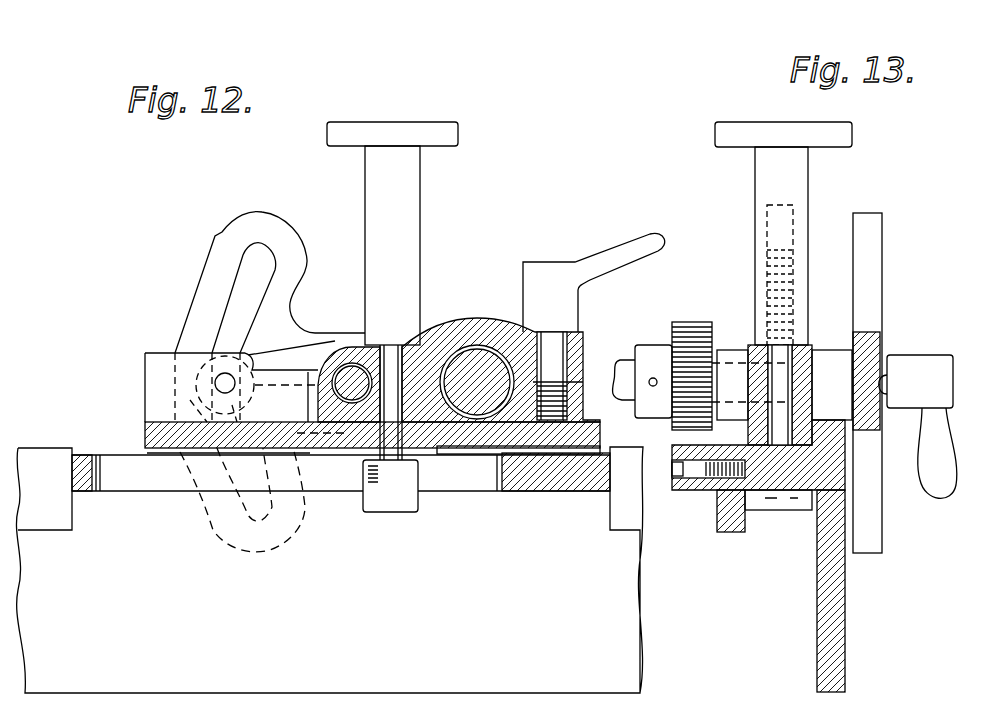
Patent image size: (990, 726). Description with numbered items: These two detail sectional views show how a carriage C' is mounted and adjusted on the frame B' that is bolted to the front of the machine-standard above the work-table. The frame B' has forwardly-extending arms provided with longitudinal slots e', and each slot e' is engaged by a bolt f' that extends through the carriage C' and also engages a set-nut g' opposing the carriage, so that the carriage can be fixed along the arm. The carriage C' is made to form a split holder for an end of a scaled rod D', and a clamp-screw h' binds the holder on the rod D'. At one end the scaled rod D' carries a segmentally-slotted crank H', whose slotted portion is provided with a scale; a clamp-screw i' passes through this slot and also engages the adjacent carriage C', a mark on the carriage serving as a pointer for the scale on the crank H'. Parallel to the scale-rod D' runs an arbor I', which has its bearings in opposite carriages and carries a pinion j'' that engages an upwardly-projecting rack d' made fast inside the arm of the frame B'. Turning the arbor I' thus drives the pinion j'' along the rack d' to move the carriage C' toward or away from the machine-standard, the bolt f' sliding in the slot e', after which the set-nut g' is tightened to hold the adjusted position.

In FIG. 12, the frame B' is at (329, 570).
In FIG. 13, the frame B' is at (802, 591).
In FIG. 12, the carriage C' is at (372, 452).
In FIG. 13, the carriage C' is at (762, 401).
In FIG. 12, the scaled rod D' is at (501, 370).
In FIG. 12, the segmentally-slotted crank H' is at (270, 382).
In FIG. 13, the segmentally-slotted crank H' is at (848, 383).
In FIG. 12, the arbor I' is at (349, 366).
In FIG. 13, the arbor I' is at (636, 377).
In FIG. 12, the longitudinal slot e' is at (144, 468).
In FIG. 12, the bolt f' is at (373, 464).
In FIG. 13, the bolt f' is at (764, 516).
In FIG. 12, the set-nut g' is at (392, 317).
In FIG. 13, the set-nut g' is at (783, 233).
In FIG. 12, the clamp-screw h' is at (594, 282).
In FIG. 12, the clamp-screw i' is at (245, 387).
In FIG. 13, the clamp-screw i' is at (918, 426).
In FIG. 13, the pinion j'' is at (692, 357).
In FIG. 13, the rack d' is at (708, 491).